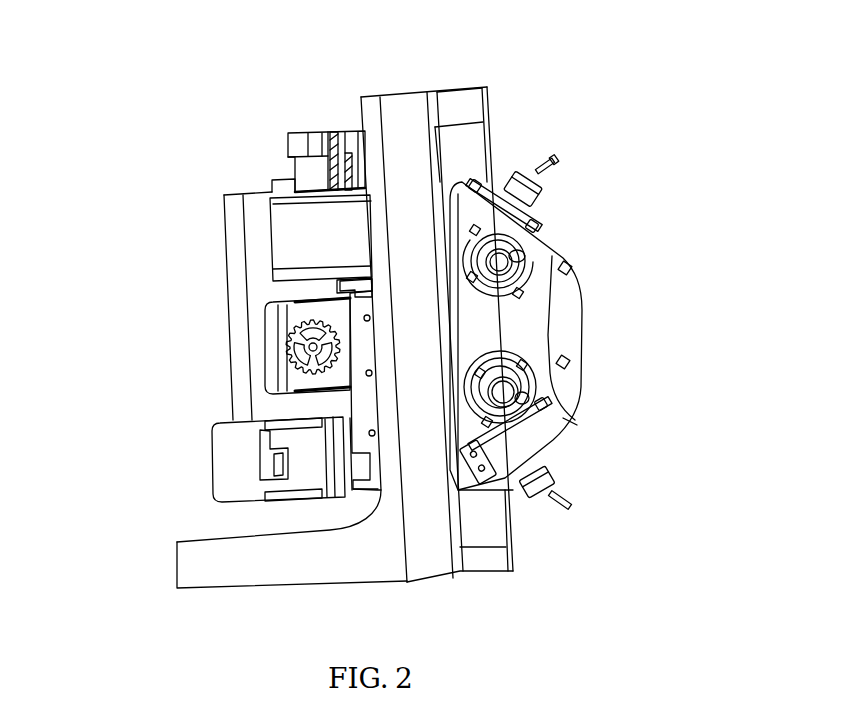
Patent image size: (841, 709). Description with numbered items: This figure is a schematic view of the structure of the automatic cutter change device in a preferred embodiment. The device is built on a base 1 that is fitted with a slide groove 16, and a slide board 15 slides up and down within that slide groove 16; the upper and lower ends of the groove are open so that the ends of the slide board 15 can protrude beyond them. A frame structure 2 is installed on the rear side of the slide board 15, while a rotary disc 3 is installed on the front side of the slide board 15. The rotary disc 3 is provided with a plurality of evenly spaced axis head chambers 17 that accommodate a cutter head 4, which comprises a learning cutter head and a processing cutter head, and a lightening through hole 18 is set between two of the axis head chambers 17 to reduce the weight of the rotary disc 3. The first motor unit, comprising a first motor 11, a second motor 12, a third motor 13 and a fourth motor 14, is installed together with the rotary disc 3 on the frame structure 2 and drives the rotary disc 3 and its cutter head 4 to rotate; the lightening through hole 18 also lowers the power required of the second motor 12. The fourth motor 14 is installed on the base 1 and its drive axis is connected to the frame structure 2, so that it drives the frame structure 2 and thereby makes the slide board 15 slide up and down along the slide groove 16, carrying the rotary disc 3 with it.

The base 1 is at (420, 532).
The frame structure 2 is at (255, 210).
The rotary disc 3 is at (562, 270).
The cutter head 4 is at (518, 192).
The first motor 11 is at (310, 337).
The second motor 12 is at (295, 252).
The third motor 13 is at (245, 457).
The fourth motor 14 is at (313, 162).
The slide board 15 is at (463, 152).
The slide groove 16 is at (453, 105).
The axis head chamber 17 is at (507, 380).
The lightening through hole 18 is at (507, 330).